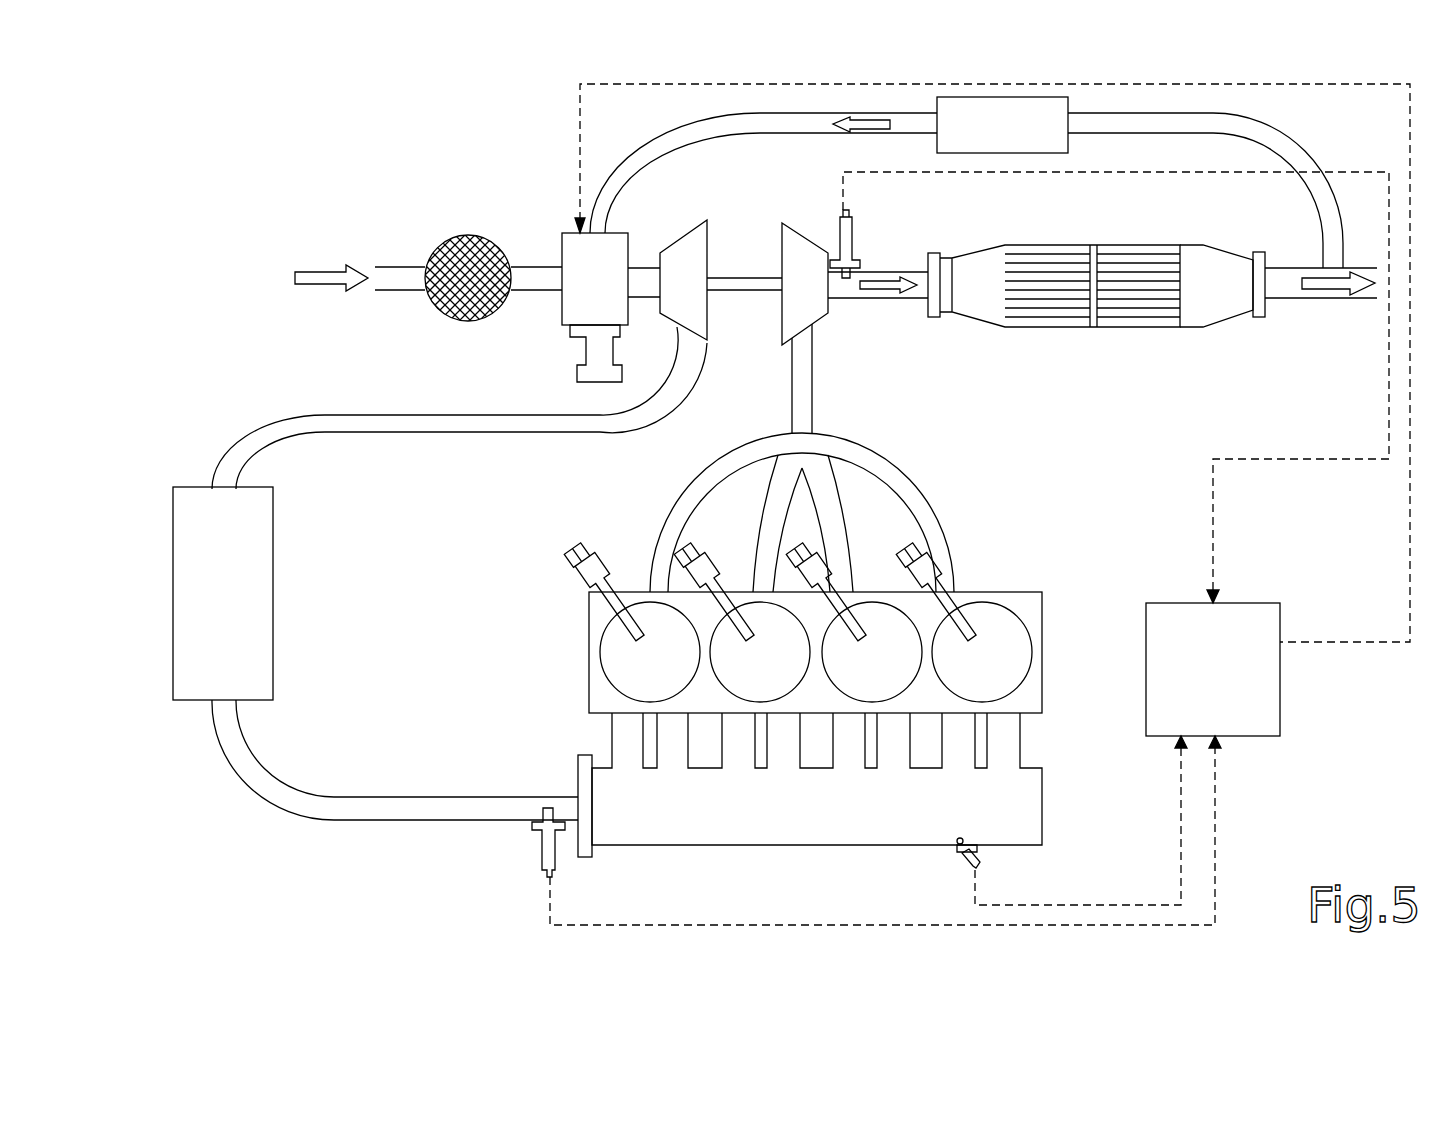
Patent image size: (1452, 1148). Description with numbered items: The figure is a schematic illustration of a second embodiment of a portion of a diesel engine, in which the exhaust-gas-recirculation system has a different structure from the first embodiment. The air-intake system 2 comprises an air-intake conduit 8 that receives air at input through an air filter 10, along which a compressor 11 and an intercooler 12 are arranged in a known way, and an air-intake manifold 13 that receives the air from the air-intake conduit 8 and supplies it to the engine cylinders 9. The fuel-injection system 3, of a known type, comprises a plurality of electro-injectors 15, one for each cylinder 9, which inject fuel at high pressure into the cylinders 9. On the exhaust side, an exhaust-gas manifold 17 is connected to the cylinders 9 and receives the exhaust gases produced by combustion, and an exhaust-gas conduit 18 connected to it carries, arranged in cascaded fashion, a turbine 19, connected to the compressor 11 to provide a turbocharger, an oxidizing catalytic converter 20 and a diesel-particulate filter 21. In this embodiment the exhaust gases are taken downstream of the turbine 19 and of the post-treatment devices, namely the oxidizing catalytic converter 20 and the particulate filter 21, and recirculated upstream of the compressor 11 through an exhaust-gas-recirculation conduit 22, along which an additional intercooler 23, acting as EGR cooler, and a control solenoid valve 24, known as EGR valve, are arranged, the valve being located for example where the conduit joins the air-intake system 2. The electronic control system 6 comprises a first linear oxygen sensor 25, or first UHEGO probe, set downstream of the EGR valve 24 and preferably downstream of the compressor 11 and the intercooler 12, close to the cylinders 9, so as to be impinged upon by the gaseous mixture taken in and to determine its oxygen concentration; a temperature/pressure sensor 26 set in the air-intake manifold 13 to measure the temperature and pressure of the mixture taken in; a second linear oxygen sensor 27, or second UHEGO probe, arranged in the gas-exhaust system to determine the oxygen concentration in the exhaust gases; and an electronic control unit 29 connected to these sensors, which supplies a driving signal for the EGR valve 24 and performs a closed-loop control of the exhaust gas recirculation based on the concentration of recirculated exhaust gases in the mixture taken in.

The air-intake system 2 is at (518, 232).
The fuel-injection system 3 is at (977, 572).
The electronic control system 6 is at (1212, 634).
The air-intake conduit 8 is at (532, 262).
The engine cylinders 9 is at (1005, 637).
The air filter 10 is at (456, 244).
The compressor 11 is at (700, 245).
The intercooler 12 is at (253, 573).
The air-intake manifold 13 is at (794, 848).
The electro-injectors 15 is at (688, 555).
The exhaust-gas manifold 17 is at (875, 437).
The exhaust-gas conduit 18 is at (898, 266).
The turbine 19 is at (803, 247).
The oxidizing catalytic converter 20 is at (1020, 257).
The diesel-particulate filter 21 is at (1156, 260).
The exhaust-gas-recirculation conduit 22 is at (870, 139).
The additional intercooler 23 is at (1062, 143).
The control solenoid valve 24 is at (586, 350).
The first linear oxygen sensor 25 is at (553, 880).
The temperature/pressure sensor 26 is at (977, 857).
The second linear oxygen sensor 27 is at (850, 243).
The electronic control unit 29 is at (1264, 612).